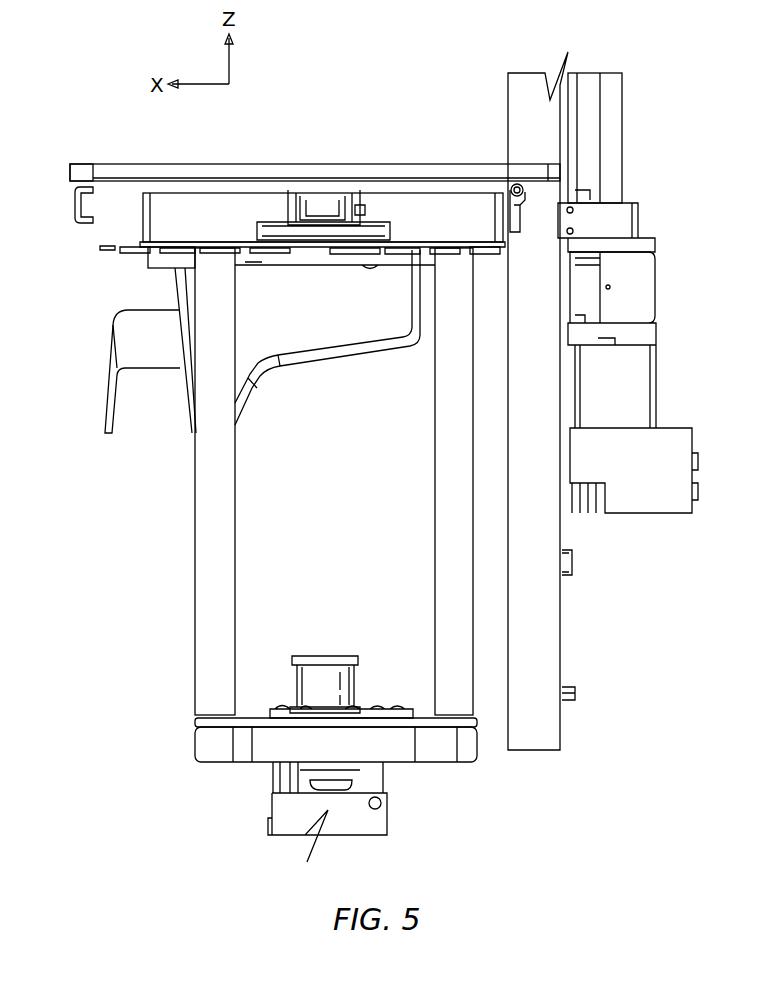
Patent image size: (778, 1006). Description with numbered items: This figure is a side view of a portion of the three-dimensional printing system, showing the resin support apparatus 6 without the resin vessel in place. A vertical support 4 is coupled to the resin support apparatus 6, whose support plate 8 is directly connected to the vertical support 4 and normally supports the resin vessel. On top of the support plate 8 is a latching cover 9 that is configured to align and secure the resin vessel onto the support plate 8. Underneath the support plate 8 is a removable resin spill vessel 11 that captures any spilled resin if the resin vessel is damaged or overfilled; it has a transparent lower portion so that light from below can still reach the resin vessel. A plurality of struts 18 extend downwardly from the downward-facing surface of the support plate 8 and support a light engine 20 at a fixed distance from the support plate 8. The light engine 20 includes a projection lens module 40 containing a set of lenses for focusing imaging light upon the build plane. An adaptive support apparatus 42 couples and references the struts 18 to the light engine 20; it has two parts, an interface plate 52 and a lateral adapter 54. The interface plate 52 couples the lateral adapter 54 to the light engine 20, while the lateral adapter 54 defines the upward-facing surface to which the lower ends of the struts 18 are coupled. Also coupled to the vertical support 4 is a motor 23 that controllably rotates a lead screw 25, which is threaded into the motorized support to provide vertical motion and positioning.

The vertical support 4 is at (532, 82).
The resin support apparatus 6 is at (60, 206).
The support plate 8 is at (158, 215).
The latching cover 9 is at (264, 152).
The resin spill vessel 11 is at (326, 338).
The struts 18 is at (202, 522).
The light engine 20 is at (380, 823).
The motor 23 is at (640, 365).
The lead screw 25 is at (615, 128).
The projection lens module 40 is at (328, 672).
The adaptive support apparatus 42 is at (180, 720).
The interface plate 52 is at (388, 708).
The lateral adapter 54 is at (205, 750).